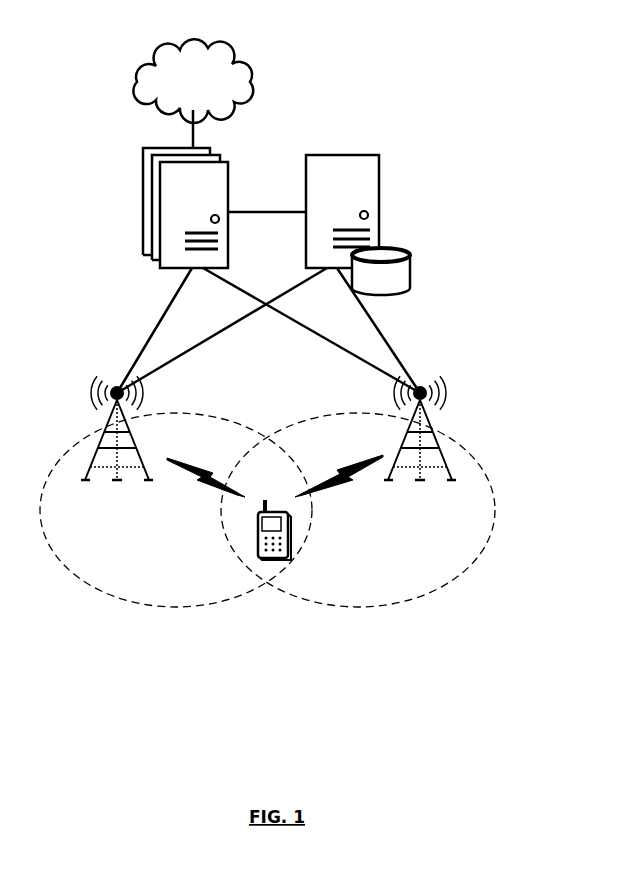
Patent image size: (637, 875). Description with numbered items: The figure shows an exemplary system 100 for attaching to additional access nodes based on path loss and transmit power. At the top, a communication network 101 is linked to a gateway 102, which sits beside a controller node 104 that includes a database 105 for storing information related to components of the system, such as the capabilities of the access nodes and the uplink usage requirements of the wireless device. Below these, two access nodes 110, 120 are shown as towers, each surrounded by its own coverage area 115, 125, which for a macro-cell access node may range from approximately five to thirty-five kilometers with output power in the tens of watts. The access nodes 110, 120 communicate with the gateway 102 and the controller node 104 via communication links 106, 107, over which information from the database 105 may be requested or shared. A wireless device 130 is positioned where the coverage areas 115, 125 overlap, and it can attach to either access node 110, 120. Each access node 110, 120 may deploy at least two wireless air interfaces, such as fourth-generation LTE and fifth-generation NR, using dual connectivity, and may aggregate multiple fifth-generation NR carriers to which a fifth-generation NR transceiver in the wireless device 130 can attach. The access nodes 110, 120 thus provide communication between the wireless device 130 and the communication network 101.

The system 100 is at (322, 53).
The communication network 101 is at (193, 93).
The gateway 102 is at (142, 183).
The controller node 104 is at (380, 197).
The database 105 is at (410, 267).
The communication link 106 is at (250, 297).
The communication link 107 is at (218, 334).
The access node 110 is at (100, 457).
The coverage area 115 is at (105, 597).
The access node 120 is at (438, 460).
The coverage area 125 is at (433, 598).
The wireless device 130 is at (260, 545).